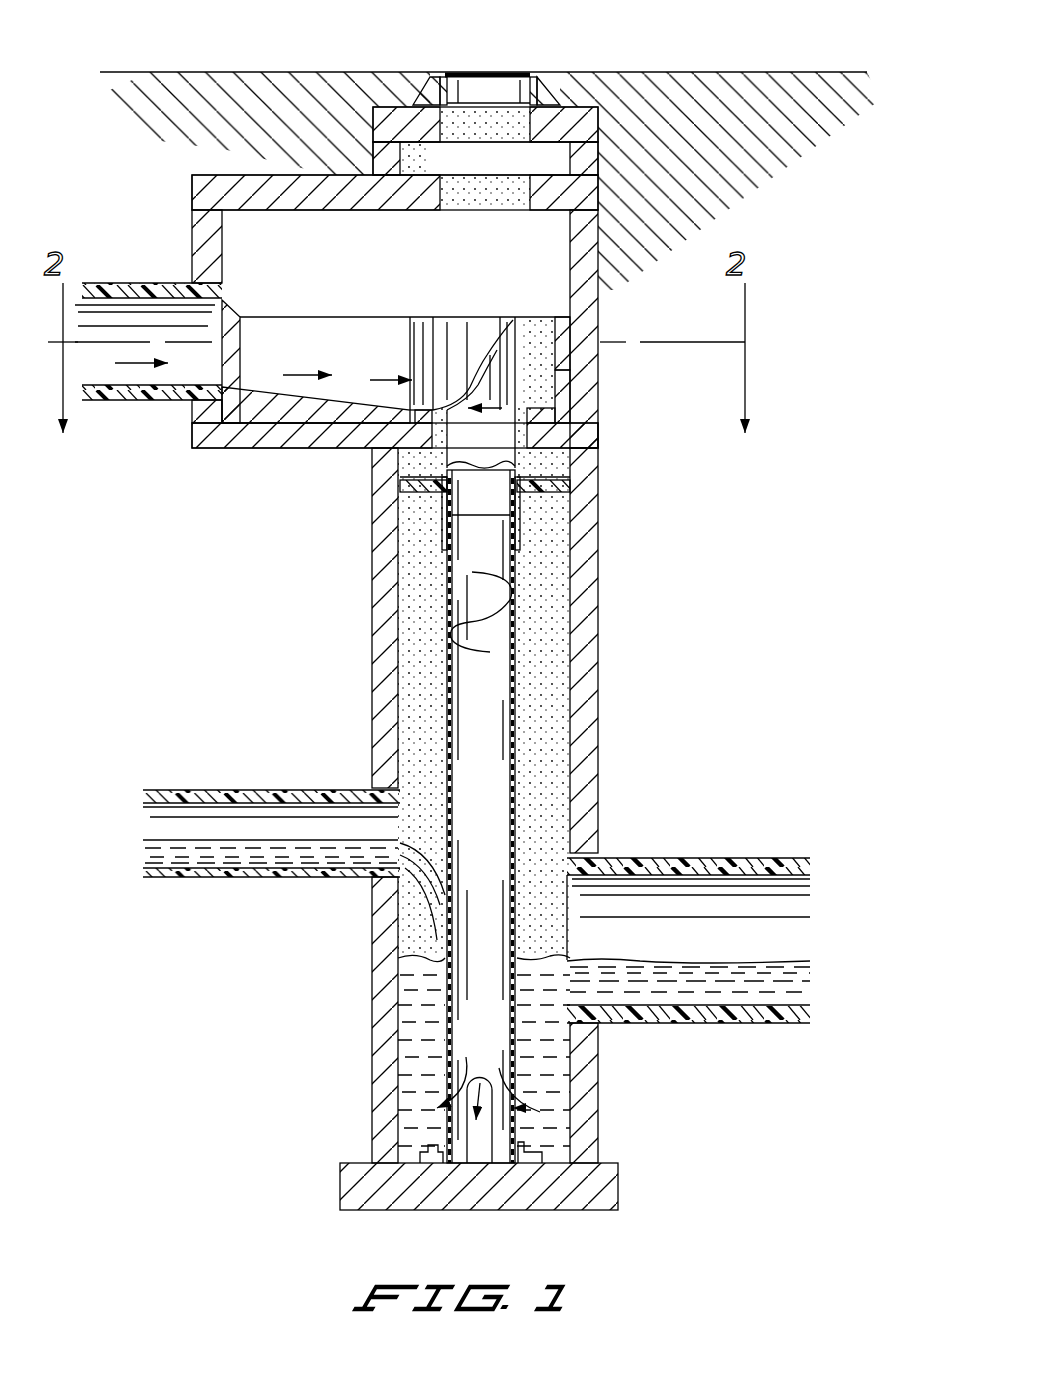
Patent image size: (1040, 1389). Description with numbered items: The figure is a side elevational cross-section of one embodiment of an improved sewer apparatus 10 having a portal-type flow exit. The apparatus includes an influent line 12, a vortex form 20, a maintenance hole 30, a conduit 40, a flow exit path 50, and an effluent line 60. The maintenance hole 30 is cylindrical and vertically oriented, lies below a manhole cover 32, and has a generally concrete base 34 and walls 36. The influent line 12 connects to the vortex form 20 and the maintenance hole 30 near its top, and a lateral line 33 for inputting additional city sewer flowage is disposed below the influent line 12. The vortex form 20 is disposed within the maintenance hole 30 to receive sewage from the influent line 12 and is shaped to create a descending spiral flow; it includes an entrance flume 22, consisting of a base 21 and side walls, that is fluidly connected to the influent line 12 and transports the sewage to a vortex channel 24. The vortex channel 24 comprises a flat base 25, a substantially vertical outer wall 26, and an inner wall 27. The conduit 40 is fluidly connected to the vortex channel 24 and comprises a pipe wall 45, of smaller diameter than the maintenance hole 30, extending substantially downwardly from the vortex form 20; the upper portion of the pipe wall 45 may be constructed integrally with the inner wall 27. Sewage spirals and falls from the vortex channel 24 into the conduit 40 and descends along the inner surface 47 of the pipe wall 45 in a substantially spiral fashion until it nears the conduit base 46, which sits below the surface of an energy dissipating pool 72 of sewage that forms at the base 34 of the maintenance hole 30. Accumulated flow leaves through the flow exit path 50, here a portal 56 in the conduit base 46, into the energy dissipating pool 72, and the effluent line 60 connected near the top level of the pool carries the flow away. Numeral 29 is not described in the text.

The improved sewer apparatus 10 is at (292, 553).
The influent line 12 is at (165, 318).
The vortex form 20 is at (480, 308).
The base 21 is at (350, 395).
The entrance flume 22 is at (262, 380).
The vortex channel 24 is at (530, 347).
The base 25 is at (552, 395).
The outer wall 26 is at (552, 365).
The inner wall 27 is at (517, 374).
The inlet chamber 29 is at (487, 367).
The maintenance hole 30 is at (598, 640).
The manhole cover 32 is at (508, 72).
The lateral line 33 is at (225, 828).
The base 34 is at (553, 1163).
The walls 36 is at (598, 706).
The conduit 40 is at (520, 588).
The pipe wall 45 is at (492, 652).
The base 46 is at (515, 1097).
The inner surface 47 is at (455, 748).
The flow exit path 50 is at (465, 1130).
The portal 56 is at (440, 1143).
The effluent line 60 is at (683, 900).
The energy dissipating pool 72 is at (410, 1020).